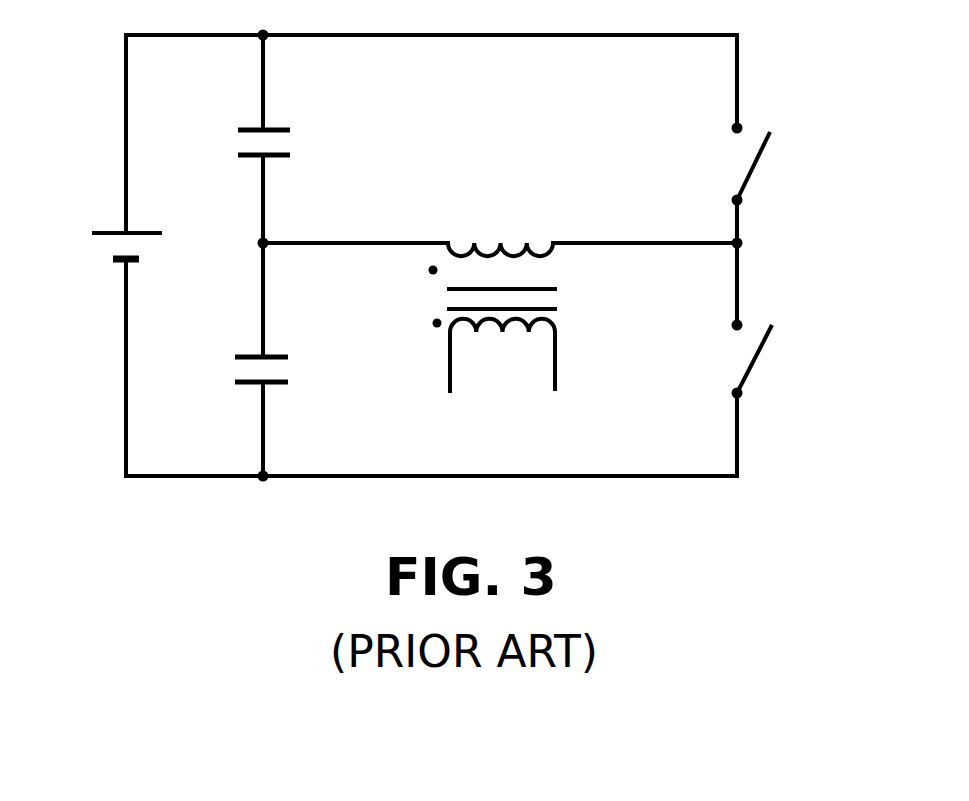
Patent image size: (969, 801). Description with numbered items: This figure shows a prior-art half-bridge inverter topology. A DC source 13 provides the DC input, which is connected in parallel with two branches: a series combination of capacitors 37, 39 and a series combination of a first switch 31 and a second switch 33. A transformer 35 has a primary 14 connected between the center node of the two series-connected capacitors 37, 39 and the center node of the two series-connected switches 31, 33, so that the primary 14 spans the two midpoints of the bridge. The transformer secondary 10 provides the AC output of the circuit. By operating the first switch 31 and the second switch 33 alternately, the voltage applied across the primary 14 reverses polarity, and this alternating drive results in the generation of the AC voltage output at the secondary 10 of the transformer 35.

The transformer secondary 10 is at (555, 352).
The DC source 13 is at (140, 261).
The primary 14 is at (497, 250).
The switch SW1 31 is at (755, 167).
The switch SW2 33 is at (758, 355).
The transformer 35 is at (550, 279).
The capacitor 37 is at (247, 128).
The capacitor 39 is at (245, 382).